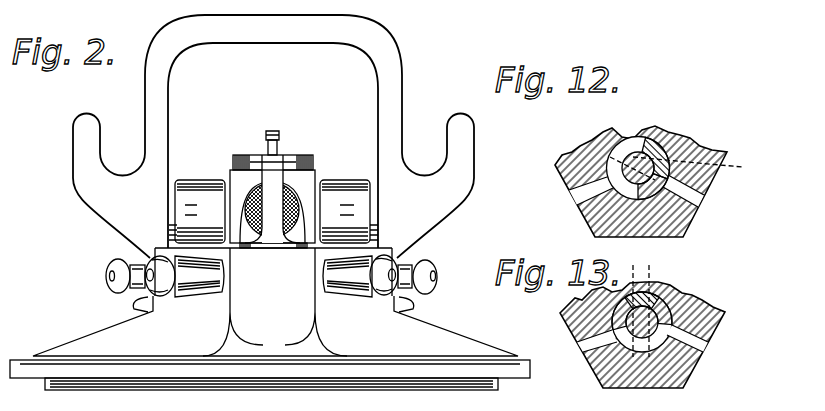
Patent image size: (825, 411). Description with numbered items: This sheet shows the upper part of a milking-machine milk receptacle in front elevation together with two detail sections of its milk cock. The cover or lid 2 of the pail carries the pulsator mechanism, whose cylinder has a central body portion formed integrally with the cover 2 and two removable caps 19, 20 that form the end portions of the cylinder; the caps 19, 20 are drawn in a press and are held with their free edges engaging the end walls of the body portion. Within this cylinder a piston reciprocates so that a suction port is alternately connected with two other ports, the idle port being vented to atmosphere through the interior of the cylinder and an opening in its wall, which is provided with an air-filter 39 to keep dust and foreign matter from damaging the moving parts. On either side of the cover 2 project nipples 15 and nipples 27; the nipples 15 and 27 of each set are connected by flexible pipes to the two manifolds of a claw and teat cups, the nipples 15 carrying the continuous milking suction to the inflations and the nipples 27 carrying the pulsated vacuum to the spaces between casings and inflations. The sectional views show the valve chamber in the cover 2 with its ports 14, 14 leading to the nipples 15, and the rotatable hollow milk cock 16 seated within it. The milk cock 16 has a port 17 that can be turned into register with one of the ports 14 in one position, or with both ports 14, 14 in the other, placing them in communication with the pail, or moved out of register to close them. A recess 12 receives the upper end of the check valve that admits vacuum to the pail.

In FIG. 2, the cover or lid 2 is at (483, 334).
In FIG. 12, the recess 12 is at (630, 147).
In FIG. 12, the ports 14 is at (587, 198).
In FIG. 13, the ports 14 is at (595, 348).
In FIG. 2, the nipples 15 is at (165, 299).
In FIG. 2, the rotatable hollow valve or milk cock 16 is at (273, 183).
In FIG. 12, the rotatable hollow valve or milk cock 16 is at (689, 168).
In FIG. 13, the rotatable hollow valve or milk cock 16 is at (650, 270).
In FIG. 13, the port 17 is at (661, 334).
In FIG. 2, the removable cap 19 is at (192, 192).
In FIG. 2, the removable cap 20 is at (350, 203).
In FIG. 2, the nipples 27 is at (107, 283).
In FIG. 2, the air-filter 39 is at (292, 203).